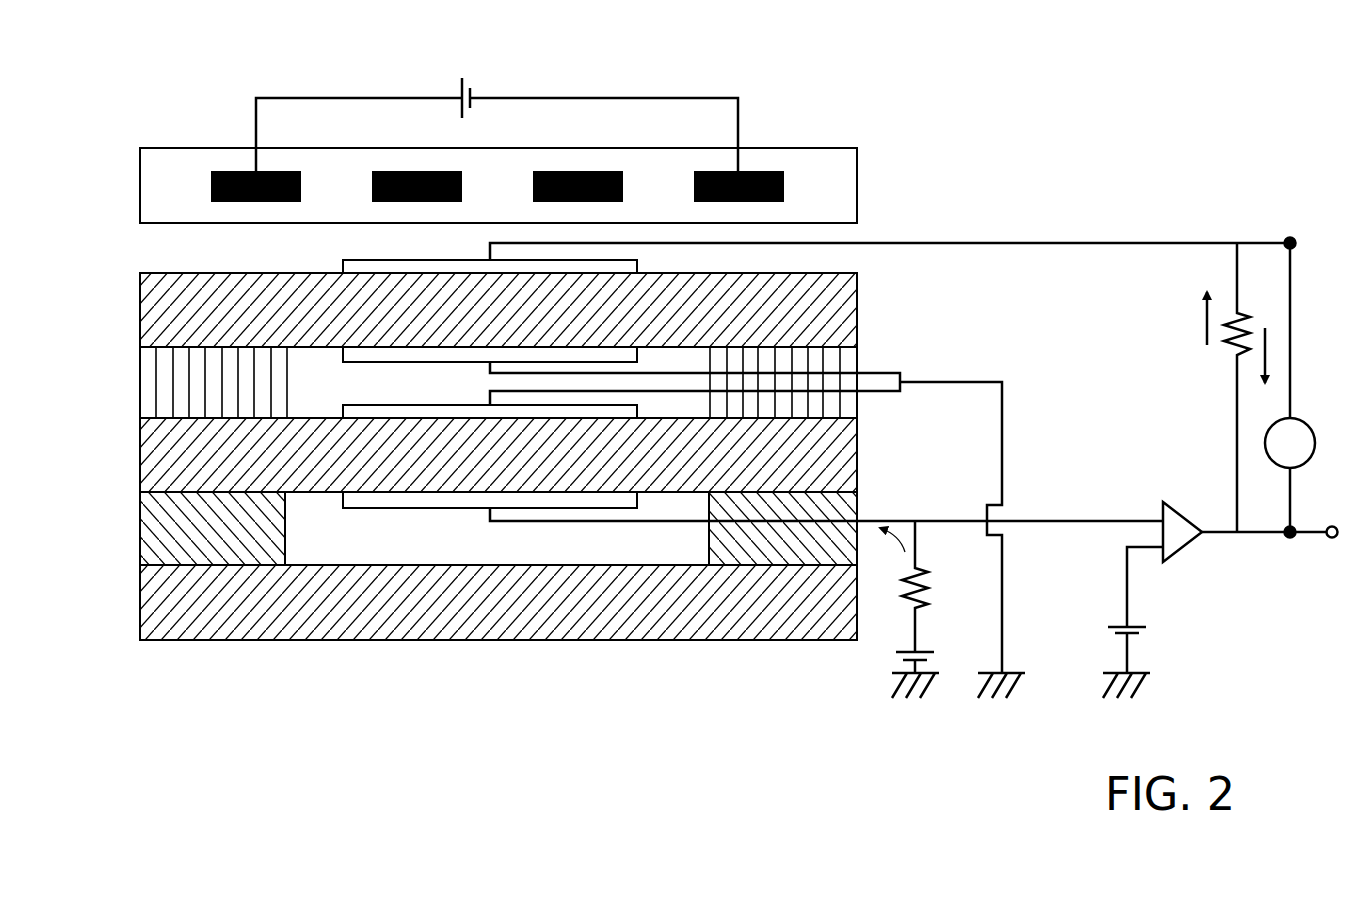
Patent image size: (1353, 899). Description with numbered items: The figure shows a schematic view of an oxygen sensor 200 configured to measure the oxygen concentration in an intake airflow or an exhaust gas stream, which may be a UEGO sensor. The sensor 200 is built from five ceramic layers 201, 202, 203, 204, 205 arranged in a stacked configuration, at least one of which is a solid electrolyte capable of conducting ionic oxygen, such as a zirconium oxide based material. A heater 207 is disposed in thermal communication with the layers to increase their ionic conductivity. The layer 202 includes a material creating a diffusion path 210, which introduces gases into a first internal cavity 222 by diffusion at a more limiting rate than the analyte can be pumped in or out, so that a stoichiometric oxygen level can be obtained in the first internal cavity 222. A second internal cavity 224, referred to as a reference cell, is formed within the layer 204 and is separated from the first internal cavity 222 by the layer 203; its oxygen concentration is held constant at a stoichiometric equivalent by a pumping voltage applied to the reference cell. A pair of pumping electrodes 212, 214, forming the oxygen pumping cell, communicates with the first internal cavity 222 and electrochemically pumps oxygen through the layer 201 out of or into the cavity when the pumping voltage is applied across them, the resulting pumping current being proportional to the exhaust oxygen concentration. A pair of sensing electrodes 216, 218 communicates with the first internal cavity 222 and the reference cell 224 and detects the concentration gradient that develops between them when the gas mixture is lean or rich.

The oxygen sensor 200 is at (846, 84).
The ceramic layer 201 is at (140, 285).
The ceramic layer 202 is at (451, 364).
The ceramic layer 203 is at (140, 480).
The ceramic layer 204 is at (467, 528).
The ceramic layer 205 is at (140, 627).
The heater 207 is at (211, 175).
The diffusion path 210 is at (175, 400).
The pumping electrode 212 is at (343, 257).
The pumping electrode 214 is at (344, 362).
The sensing electrode 216 is at (345, 404).
The sensing electrode 218 is at (345, 508).
The first internal cavity 222 is at (429, 381).
The second internal cavity 224 is at (429, 536).